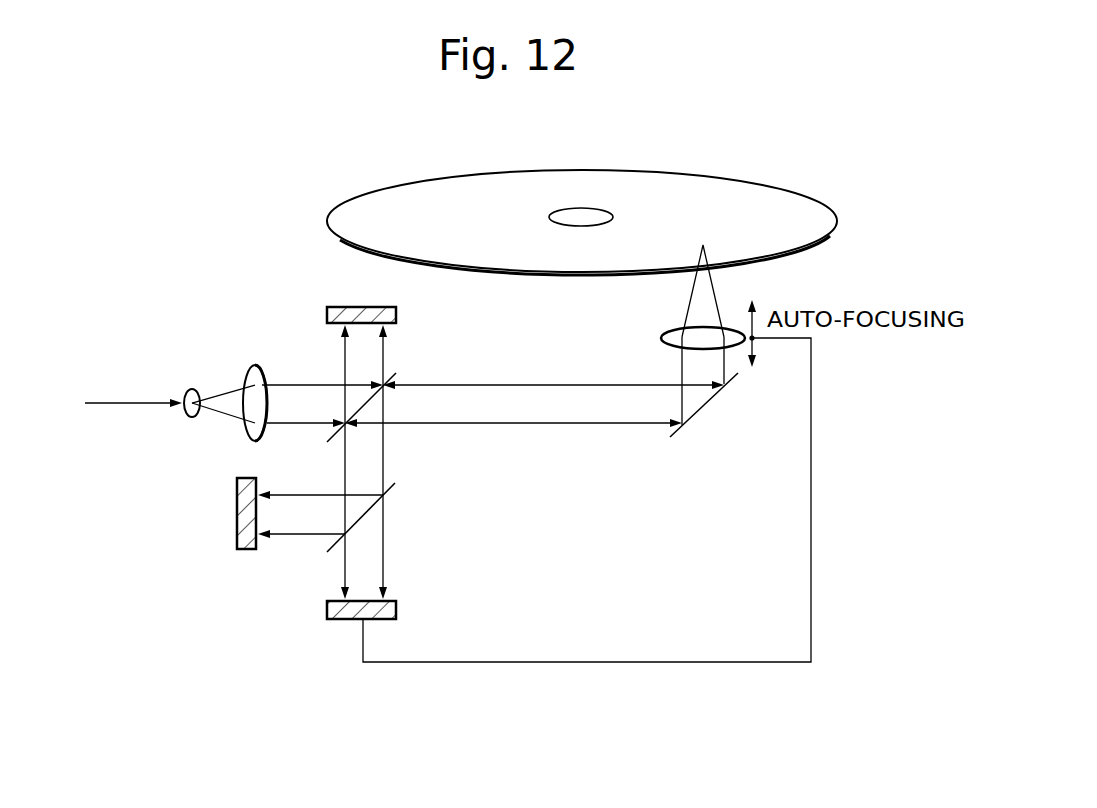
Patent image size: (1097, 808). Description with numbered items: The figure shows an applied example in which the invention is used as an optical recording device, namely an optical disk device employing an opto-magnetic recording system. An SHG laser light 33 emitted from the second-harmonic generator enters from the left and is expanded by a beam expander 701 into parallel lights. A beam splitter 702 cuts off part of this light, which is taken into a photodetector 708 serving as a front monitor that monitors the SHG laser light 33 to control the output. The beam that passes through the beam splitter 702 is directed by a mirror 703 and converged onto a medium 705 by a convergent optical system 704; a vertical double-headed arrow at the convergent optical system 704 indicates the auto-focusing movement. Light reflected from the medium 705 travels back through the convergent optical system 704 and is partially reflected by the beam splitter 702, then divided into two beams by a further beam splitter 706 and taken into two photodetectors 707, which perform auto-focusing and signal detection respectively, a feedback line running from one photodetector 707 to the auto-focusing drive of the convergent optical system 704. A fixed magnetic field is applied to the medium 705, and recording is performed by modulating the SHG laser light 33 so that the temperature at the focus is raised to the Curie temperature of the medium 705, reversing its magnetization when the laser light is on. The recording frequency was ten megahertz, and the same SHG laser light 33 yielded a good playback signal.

The SHG laser light 33 is at (115, 405).
The beam expander 701 is at (280, 358).
The beam splitter 702 is at (397, 374).
The mirror 703 is at (709, 401).
The convergent optical system 704 is at (663, 329).
The medium 705 is at (759, 197).
The beam splitter 706 is at (393, 489).
The photodetector 707 is at (238, 514).
The photodetector for front monitor 708 is at (347, 307).